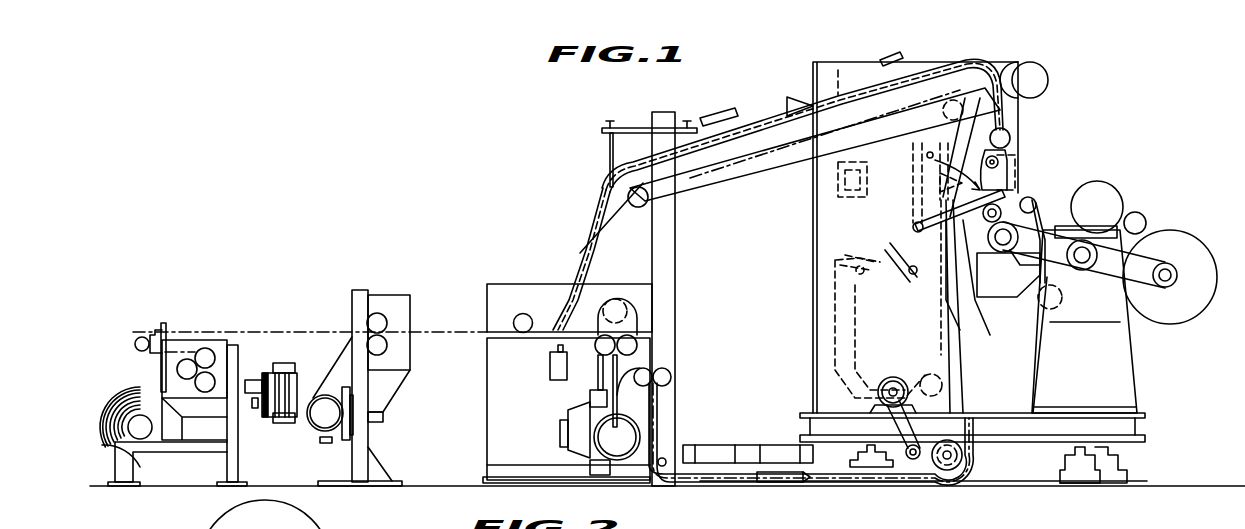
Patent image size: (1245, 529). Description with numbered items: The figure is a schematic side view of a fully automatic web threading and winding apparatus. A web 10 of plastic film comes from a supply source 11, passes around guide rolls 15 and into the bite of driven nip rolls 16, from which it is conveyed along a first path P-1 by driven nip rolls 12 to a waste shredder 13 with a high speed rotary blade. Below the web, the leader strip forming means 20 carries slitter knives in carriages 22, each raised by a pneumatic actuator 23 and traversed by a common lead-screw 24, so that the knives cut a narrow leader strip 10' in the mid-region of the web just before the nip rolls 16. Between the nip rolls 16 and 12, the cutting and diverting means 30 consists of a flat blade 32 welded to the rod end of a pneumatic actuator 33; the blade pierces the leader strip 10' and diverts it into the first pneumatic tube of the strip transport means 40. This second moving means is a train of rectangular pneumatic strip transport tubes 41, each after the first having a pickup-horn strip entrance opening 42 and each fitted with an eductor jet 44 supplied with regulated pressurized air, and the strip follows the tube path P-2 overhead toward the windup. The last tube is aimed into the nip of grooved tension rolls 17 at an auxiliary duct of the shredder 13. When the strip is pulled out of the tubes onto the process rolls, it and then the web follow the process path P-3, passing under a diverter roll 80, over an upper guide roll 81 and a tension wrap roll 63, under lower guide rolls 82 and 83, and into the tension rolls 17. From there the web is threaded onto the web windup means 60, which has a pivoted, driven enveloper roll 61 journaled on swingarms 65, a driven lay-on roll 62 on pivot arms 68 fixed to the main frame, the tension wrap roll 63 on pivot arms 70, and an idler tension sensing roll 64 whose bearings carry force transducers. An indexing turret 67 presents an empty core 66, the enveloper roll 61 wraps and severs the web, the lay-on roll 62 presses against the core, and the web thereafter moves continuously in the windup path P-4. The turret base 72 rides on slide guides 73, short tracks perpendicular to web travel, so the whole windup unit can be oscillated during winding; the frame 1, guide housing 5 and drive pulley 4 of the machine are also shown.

The machine frame 1 is at (940, 66).
The pulley and drive arm 4 is at (940, 358).
The guide housing 5 is at (912, 190).
The web 10 is at (459, 346).
The leader strip 10' is at (656, 163).
The supply source 11 is at (174, 314).
The nip rolls 12 is at (635, 338).
The web shredder 13 is at (592, 438).
The guide rolls 15 is at (185, 368).
The driven nip rolls 16 is at (410, 344).
The grooved tension rolls 17 is at (665, 373).
The leader strip forming means 20 is at (289, 441).
The carriage 22 is at (264, 373).
The pneumatic actuator 23 is at (292, 390).
The lead-screw 24 is at (268, 418).
The cutting and diverting means 30 is at (541, 391).
The flat blade 32 is at (556, 346).
The pneumatic actuator 33 is at (548, 370).
The strip transport means 40 is at (562, 198).
The pneumatic strip transport tube 41 is at (600, 182).
The strip entrance opening 42 is at (610, 228).
The eductor jet 44 is at (712, 120).
The web windup means 60 is at (1137, 180).
The enveloper roll 61 is at (1040, 200).
The lay-on roll 62 is at (925, 156).
The tension wrap roll 63 is at (975, 125).
The tension sensing roll 64 is at (1020, 162).
The swingarms 65 is at (1018, 295).
The empty core 66 is at (976, 243).
The indexing turret 67 is at (1133, 340).
The pivot arms 68 is at (919, 277).
The pivot arms 70 is at (1040, 102).
The turret base 72 is at (1084, 321).
The slide guides 73 is at (1120, 455).
The diverter roll 80 is at (512, 315).
The upper guide roll 81 is at (650, 197).
The lower guide roll 82 is at (949, 472).
The lower guide roll 83 is at (663, 466).
The first path P-1 is at (456, 332).
The position P-2 is at (775, 100).
The web process path P-3 is at (848, 114).
The windup fourth path P-4 is at (788, 221).